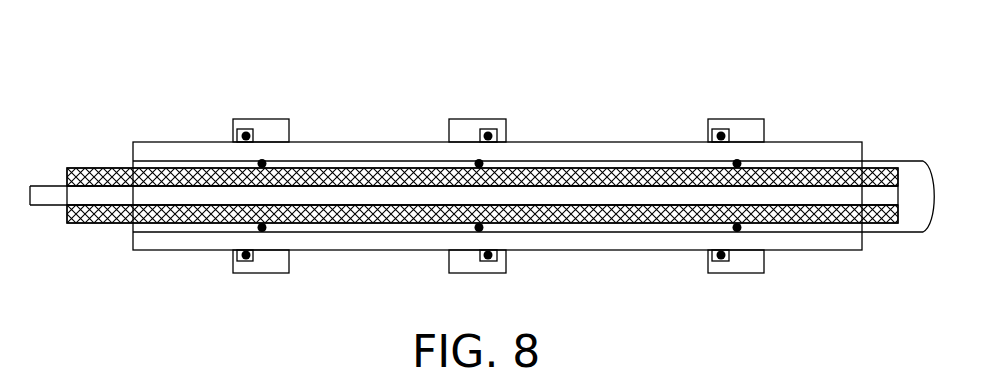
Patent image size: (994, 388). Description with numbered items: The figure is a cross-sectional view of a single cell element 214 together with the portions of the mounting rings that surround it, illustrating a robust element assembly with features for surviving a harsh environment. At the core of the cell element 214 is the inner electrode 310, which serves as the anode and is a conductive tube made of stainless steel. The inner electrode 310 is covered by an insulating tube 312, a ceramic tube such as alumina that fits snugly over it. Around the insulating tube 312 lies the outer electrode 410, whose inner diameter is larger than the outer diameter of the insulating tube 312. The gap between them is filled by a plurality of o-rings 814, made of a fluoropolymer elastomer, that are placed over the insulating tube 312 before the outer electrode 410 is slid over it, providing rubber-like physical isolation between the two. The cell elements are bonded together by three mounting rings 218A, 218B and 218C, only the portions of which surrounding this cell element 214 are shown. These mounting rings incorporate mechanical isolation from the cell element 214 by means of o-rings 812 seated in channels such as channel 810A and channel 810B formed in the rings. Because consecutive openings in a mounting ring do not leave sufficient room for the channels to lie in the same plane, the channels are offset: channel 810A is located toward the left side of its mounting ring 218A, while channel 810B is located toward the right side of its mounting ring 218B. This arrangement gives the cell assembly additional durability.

The cell element 214 is at (173, 79).
The mounting ring 218A is at (290, 120).
The mounting ring 218B is at (459, 119).
The mounting ring 218C is at (739, 118).
The channel 810A is at (252, 133).
The channel 810B is at (495, 130).
The o-ring 812 is at (235, 138).
The o-ring 814 is at (264, 161).
The outer electrode 410 is at (588, 143).
The insulating tube 312 is at (880, 168).
The inner electrode 310 is at (897, 197).